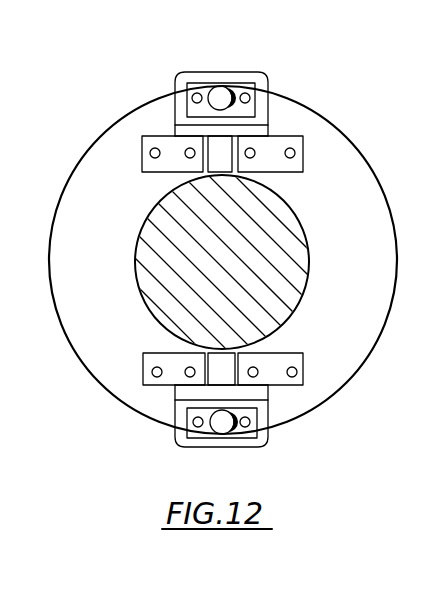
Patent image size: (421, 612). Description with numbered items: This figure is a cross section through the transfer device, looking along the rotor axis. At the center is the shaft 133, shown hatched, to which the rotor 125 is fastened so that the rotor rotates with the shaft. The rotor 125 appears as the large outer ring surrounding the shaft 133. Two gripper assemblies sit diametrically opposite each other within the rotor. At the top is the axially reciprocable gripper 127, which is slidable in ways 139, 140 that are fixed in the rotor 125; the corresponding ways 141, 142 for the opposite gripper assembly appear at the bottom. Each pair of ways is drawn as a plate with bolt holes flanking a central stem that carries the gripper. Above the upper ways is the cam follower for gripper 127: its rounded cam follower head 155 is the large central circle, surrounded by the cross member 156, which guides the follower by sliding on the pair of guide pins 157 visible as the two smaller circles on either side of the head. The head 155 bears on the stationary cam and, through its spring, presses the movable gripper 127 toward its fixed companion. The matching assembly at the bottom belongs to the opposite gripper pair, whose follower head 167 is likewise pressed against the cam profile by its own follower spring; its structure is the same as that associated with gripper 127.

The rotor 125 is at (138, 110).
The movable gripper 127 is at (209, 72).
The shaft 133 is at (297, 287).
The way 139 is at (142, 147).
The way 140 is at (303, 157).
The way 141 is at (145, 383).
The way 142 is at (305, 383).
The cam follower head 155 is at (221, 96).
The cross member 156 is at (195, 83).
The guide pins 157 is at (192, 97).
The follower head 167 is at (222, 423).